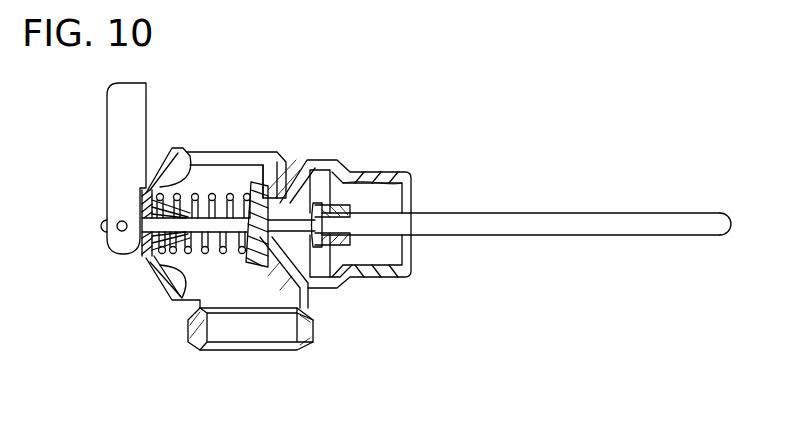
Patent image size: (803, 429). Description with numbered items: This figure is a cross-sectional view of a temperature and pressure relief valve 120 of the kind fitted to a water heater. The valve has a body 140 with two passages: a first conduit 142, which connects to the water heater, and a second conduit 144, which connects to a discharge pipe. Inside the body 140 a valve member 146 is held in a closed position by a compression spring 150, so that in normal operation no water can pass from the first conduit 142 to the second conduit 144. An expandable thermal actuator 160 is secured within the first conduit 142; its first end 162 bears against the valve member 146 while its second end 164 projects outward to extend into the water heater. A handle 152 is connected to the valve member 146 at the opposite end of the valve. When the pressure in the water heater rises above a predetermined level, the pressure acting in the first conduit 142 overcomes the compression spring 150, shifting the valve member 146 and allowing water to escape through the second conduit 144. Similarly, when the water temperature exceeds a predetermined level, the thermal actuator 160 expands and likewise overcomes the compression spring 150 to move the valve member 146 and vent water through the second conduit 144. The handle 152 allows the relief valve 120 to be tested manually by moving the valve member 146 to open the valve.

The T&P relief valve 120 is at (428, 133).
The body 140 is at (187, 299).
The first conduit 142 is at (386, 279).
The second conduit 144 is at (304, 350).
The valve member 146 is at (262, 268).
The compression spring 150 is at (200, 196).
The handle 152 is at (108, 138).
The thermal actuator 160 is at (695, 240).
The first end 162 is at (357, 210).
The second end 164 is at (716, 207).